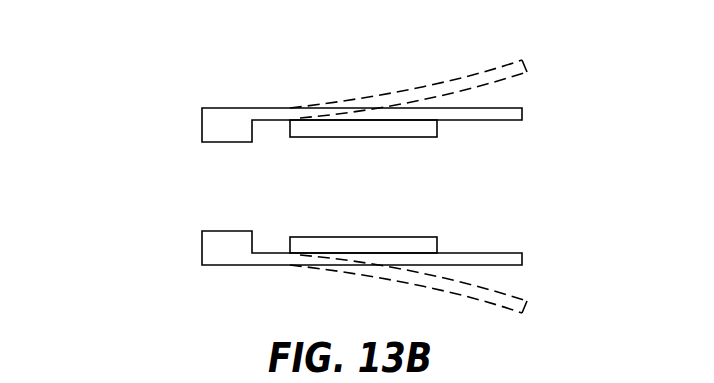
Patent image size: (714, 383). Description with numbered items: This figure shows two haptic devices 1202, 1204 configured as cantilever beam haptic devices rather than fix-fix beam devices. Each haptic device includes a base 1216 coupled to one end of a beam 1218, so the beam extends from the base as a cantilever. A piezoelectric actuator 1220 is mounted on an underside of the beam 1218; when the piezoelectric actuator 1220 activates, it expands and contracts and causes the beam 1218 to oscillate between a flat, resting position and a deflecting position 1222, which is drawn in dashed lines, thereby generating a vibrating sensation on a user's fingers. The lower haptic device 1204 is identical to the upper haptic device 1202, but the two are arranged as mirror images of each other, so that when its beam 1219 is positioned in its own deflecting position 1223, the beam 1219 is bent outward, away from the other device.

The haptic device 1202 is at (160, 77).
The haptic device 1204 is at (160, 217).
The base 1216 is at (225, 128).
The beam 1218 is at (307, 107).
The piezoelectric actuator 1220 is at (360, 128).
The deflecting position 1222 is at (400, 93).
The beam 1219 is at (307, 266).
The deflecting position 1223 is at (400, 280).